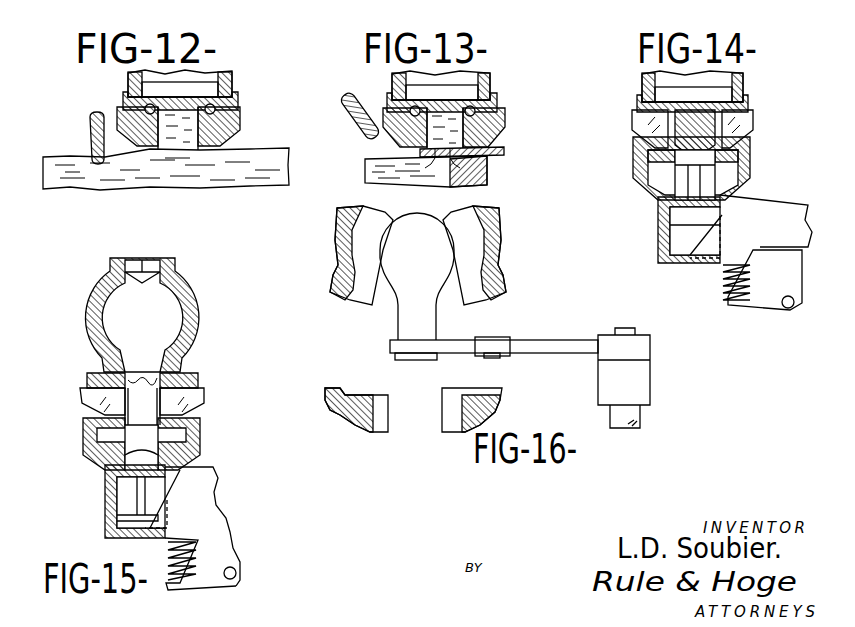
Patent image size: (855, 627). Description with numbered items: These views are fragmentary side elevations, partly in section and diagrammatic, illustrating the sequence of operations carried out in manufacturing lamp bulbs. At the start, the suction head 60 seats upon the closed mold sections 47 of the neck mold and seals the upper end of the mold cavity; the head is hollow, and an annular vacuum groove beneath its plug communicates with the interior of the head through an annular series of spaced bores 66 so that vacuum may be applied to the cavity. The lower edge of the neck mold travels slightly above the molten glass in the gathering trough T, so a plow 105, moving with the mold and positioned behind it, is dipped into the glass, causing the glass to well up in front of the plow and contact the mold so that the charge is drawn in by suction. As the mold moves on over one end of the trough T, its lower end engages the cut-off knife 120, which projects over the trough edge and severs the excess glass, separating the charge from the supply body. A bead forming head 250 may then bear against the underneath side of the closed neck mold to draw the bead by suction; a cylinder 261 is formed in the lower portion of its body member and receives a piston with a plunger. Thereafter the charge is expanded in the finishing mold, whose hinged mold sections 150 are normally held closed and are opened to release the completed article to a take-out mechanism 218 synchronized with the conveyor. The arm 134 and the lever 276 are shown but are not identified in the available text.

In FIG. 12, the mold sections 47 is at (248, 124).
In FIG. 13, the mold sections 47 is at (504, 126).
In FIG. 14, the mold sections 47 is at (754, 121).
In FIG. 15, the mold sections 47 is at (200, 397).
In FIG. 16, the mold sections 47 is at (498, 400).
In FIG. 12, the suction head 60 is at (232, 75).
In FIG. 13, the suction head 60 is at (490, 76).
In FIG. 14, the suction head 60 is at (748, 76).
In FIG. 15, the suction head 60 is at (200, 434).
In FIG. 12, the spaced bores 66 is at (238, 100).
In FIG. 12, the plow 105 is at (90, 118).
In FIG. 13, the plow 105 is at (360, 126).
In FIG. 12, the gathering trough T is at (243, 184).
In FIG. 13, the gathering trough T is at (365, 168).
In FIG. 13, the cut-off knife 120 is at (504, 152).
In FIG. 14, the arm 134 is at (788, 213).
In FIG. 15, the arm 134 is at (223, 485).
In FIG. 15, the mold sections 150 is at (193, 302).
In FIG. 16, the mold sections 150 is at (506, 246).
In FIG. 16, the take-out mechanism 218 is at (585, 320).
In FIG. 14, the bead forming head 250 is at (752, 153).
In FIG. 14, the cylinder 261 is at (678, 239).
In FIG. 15, the cylinder 261 is at (125, 498).
In FIG. 14, the lever 276 is at (765, 312).
In FIG. 15, the lever 276 is at (205, 590).